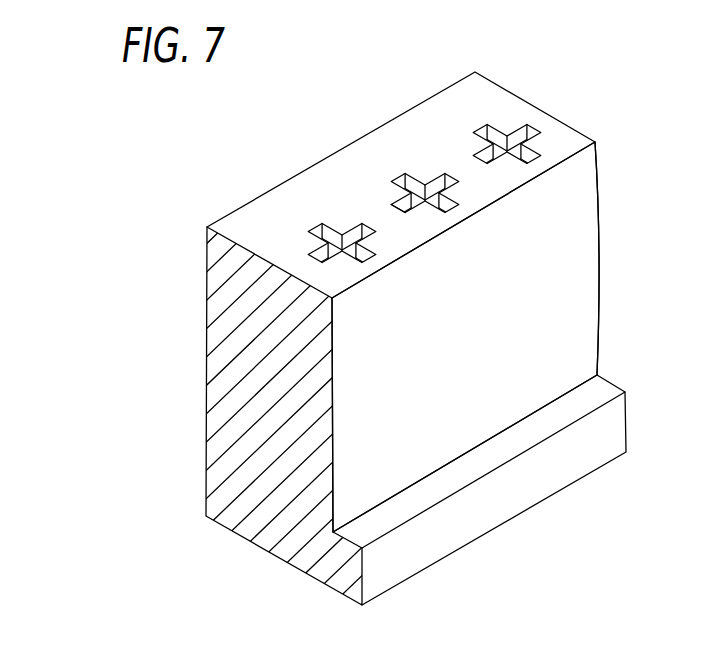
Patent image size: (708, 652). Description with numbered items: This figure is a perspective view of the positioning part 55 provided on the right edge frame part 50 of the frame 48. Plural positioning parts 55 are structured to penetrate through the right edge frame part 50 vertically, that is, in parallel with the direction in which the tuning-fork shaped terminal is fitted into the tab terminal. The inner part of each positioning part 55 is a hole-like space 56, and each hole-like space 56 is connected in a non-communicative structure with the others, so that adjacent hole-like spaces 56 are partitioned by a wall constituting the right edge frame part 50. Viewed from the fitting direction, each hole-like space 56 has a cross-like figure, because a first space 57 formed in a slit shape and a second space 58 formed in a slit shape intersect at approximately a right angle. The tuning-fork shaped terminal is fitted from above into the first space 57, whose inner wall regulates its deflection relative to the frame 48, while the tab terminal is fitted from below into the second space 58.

The frame 48 is at (349, 343).
The right edge frame part 50 is at (560, 235).
The positioning part 55 is at (505, 117).
The hole-like space 56 is at (340, 247).
The first space 57 is at (412, 187).
The second space 58 is at (393, 205).